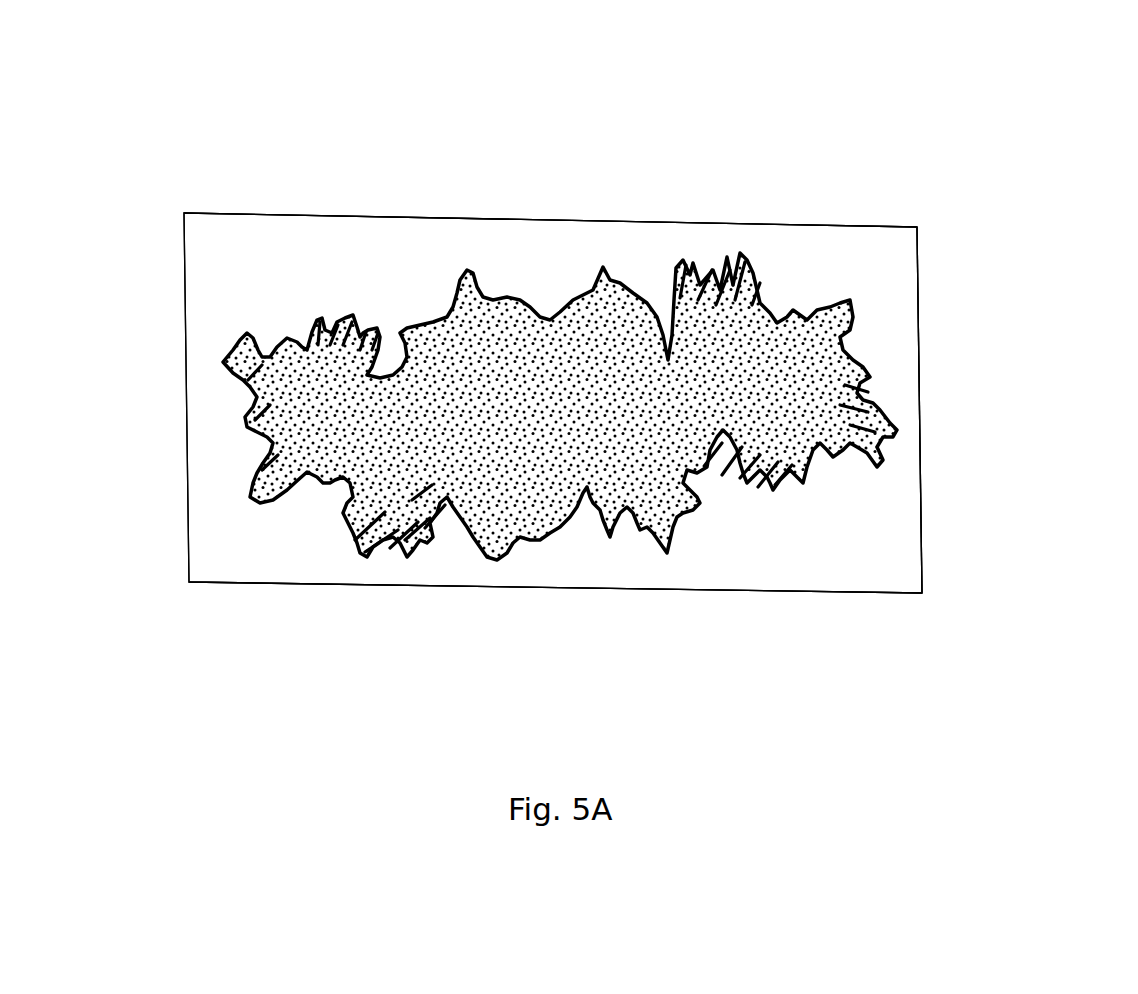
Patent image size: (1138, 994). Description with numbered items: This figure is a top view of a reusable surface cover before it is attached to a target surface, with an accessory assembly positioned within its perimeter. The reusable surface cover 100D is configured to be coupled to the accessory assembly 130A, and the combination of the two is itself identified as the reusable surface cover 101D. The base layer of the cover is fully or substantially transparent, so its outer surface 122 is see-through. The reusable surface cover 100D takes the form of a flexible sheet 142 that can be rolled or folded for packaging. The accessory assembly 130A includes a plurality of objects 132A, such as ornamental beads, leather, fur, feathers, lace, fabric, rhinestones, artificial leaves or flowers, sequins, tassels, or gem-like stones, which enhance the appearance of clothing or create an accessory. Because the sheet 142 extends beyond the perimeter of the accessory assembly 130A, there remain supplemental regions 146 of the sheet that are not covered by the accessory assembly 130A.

The reusable surface cover 101D is at (285, 205).
The reusable surface cover 100D is at (435, 263).
The outer surface 122 is at (883, 260).
The flexible sheet 142 is at (919, 308).
The supplemental regions 146 is at (213, 541).
The accessory assembly 130A is at (630, 274).
The objects 132A is at (607, 363).